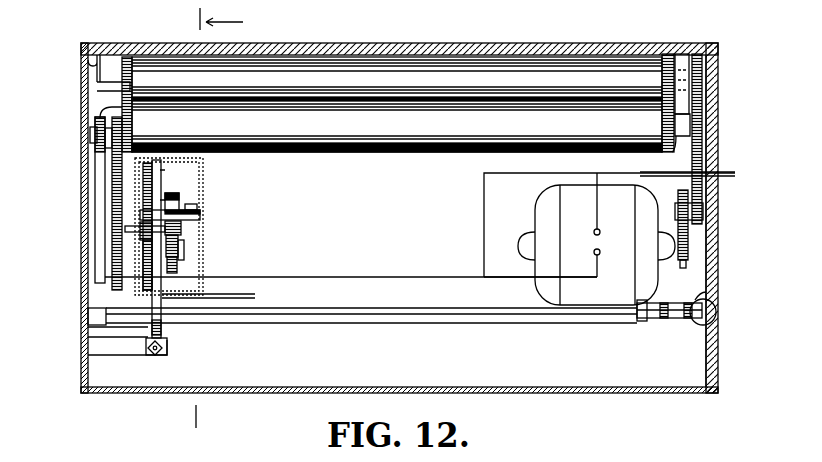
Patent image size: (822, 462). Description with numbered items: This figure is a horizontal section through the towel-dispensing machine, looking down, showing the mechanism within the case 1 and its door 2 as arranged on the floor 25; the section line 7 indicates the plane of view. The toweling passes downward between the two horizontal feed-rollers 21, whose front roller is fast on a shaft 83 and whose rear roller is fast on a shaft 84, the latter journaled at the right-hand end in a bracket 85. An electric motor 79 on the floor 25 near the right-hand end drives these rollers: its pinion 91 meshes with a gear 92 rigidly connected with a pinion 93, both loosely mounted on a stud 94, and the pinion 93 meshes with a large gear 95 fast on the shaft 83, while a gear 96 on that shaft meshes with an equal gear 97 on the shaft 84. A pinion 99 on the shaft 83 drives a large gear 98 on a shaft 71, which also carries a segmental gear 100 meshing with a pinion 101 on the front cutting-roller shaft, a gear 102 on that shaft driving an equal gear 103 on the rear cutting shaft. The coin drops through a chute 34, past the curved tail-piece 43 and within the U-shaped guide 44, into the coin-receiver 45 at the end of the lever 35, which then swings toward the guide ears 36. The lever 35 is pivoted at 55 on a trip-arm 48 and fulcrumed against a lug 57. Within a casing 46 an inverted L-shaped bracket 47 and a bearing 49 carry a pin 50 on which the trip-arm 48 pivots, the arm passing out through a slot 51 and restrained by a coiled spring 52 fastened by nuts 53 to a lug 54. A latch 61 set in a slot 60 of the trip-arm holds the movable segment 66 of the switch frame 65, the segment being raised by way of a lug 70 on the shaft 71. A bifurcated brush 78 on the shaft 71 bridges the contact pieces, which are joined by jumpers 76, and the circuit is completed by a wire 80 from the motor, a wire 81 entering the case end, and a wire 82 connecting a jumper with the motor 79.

The case 1 is at (537, 43).
The door 2 is at (582, 393).
The section line 7 is at (213, 228).
The feed-rollers 21 is at (437, 62).
The floor 25 is at (455, 321).
The chute 34 is at (688, 320).
The lever 35 is at (375, 314).
The guide ears 36 is at (716, 312).
The tail-piece 43 is at (695, 305).
The U-shaped guide 44 is at (658, 320).
The coin-receiver 45 is at (640, 322).
The casing 46 is at (183, 192).
The inverted L-shaped bracket 47 is at (198, 209).
The trip-arm 48 is at (177, 266).
The bearing 49 is at (137, 233).
The pin 50 is at (187, 228).
The slot 51 is at (164, 298).
The coiled spring 52 is at (163, 349).
The nuts 53 is at (160, 356).
The lug 54 is at (122, 356).
The pivot 55 is at (170, 328).
The lug 57 is at (90, 328).
The slot 60 is at (150, 238).
The latch 61 is at (186, 250).
The switch frame 65 is at (172, 164).
The movable segment 66 is at (184, 260).
The lug 70 is at (182, 208).
The shaft 71 is at (130, 230).
The jumper 76 is at (110, 278).
The bifurcated brush 78 is at (181, 190).
The electric motor 79 is at (600, 251).
The wire 80 is at (605, 177).
The wire 81 is at (440, 277).
The wire 82 is at (378, 277).
The shaft 83 is at (103, 140).
The shaft 84 is at (103, 87).
The bracket 85 is at (703, 107).
The pinion 91 is at (687, 275).
The gear 92 is at (689, 237).
The pinion 93 is at (703, 222).
The stud 94 is at (703, 205).
The large gear 95 is at (704, 146).
The gear 96 is at (668, 148).
The gear 97 is at (668, 52).
The large gear 98 is at (88, 314).
The pinion 99 is at (100, 107).
The segmental gear 100 is at (100, 157).
The pinion 101 is at (95, 123).
The gear 102 is at (115, 177).
The gear 103 is at (133, 57).